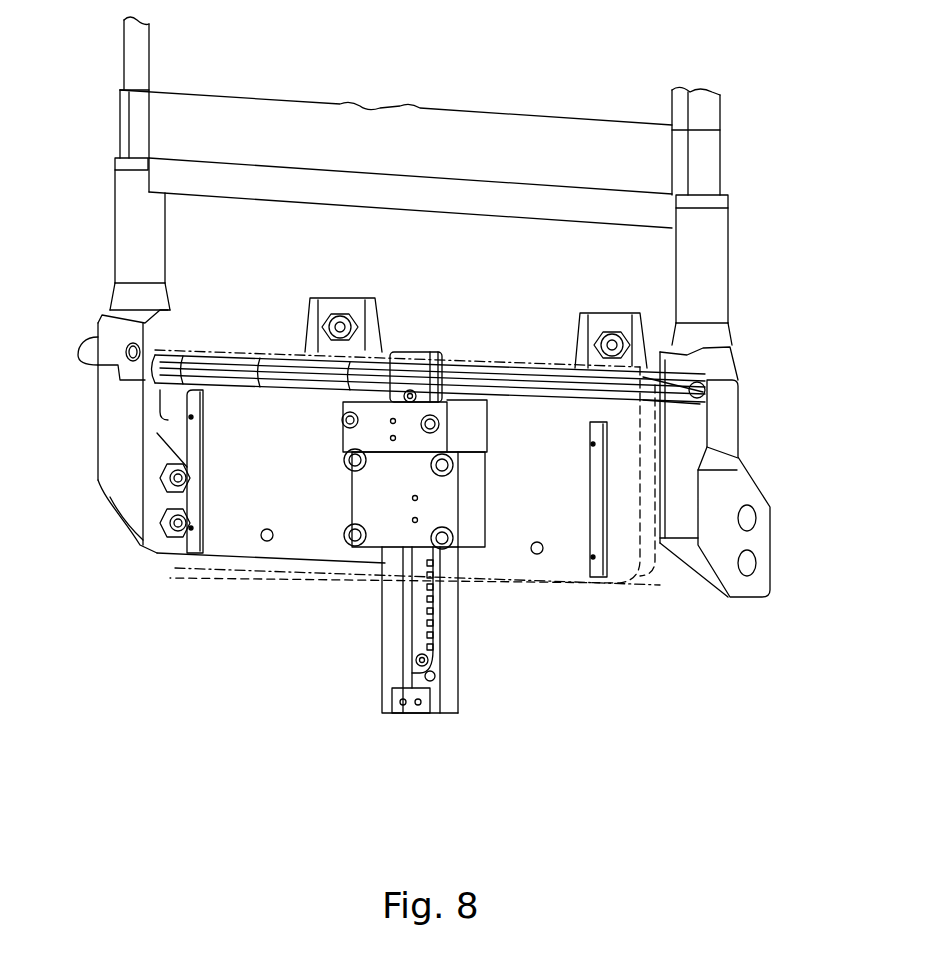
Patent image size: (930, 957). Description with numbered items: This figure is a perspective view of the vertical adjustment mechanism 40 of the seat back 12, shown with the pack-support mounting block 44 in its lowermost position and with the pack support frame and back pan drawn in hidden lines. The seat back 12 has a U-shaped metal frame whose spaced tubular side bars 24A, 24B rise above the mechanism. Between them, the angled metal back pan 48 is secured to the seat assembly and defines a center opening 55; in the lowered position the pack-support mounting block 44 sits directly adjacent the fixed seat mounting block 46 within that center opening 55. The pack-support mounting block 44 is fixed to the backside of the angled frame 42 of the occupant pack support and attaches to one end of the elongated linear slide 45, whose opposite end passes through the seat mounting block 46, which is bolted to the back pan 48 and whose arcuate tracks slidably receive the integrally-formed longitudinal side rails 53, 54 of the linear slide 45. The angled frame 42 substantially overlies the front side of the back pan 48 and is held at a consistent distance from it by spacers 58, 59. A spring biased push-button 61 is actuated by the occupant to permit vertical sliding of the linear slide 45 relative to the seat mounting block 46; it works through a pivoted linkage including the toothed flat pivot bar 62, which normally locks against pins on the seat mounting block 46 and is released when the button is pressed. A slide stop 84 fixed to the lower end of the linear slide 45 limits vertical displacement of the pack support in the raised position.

The seat back 12 is at (745, 130).
The tubular side bar 24A is at (123, 230).
The tubular side bar 24B is at (710, 252).
The vertical adjustment mechanism 40 is at (348, 645).
The angled metal frame 42 is at (555, 580).
The pack-support mounting block 44 is at (343, 460).
The linear slide 45 is at (410, 615).
The seat mounting block 46 is at (470, 497).
The angled metal back pan 48 is at (640, 592).
The longitudinal side rail 53 is at (453, 675).
The longitudinal side rail 54 is at (398, 705).
The center opening 55 is at (460, 428).
The spacer 58 is at (594, 582).
The spacer 59 is at (212, 548).
The spring biased push-button 61 is at (420, 352).
The toothed flat pivot bar 62 is at (460, 615).
The slide stop 84 is at (405, 715).